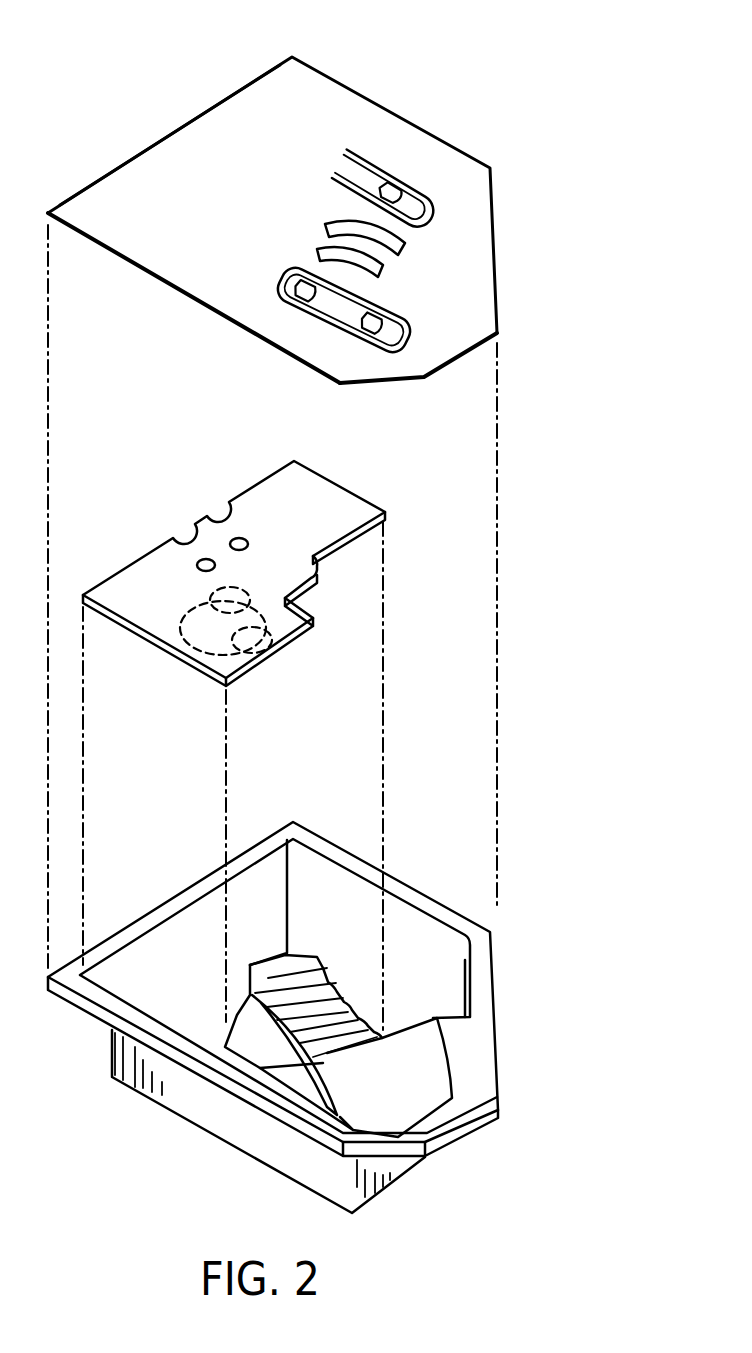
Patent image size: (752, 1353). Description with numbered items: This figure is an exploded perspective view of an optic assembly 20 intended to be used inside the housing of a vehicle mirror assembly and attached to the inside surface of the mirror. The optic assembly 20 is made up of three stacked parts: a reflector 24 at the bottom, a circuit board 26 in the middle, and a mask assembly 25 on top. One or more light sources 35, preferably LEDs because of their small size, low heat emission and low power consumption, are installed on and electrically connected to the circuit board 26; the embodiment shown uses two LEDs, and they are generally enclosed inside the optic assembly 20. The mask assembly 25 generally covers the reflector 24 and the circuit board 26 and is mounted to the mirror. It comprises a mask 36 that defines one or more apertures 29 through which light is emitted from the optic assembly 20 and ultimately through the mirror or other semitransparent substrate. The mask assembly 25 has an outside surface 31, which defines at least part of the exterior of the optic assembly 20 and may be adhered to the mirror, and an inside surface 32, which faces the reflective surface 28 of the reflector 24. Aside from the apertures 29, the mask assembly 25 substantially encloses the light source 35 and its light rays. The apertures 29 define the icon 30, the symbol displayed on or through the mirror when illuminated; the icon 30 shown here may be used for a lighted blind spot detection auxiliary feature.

The optic assembly 20 is at (578, 412).
The reflector 24 is at (472, 1062).
The mask assembly 25 is at (388, 70).
The circuit board 26 is at (312, 498).
The reflective surface 28 is at (337, 887).
The apertures 29 is at (443, 207).
The icon 30 is at (328, 127).
The outside surface 31 is at (180, 150).
The inside surface 32 is at (207, 318).
The light source 35 is at (195, 656).
The mask 36 is at (278, 131).